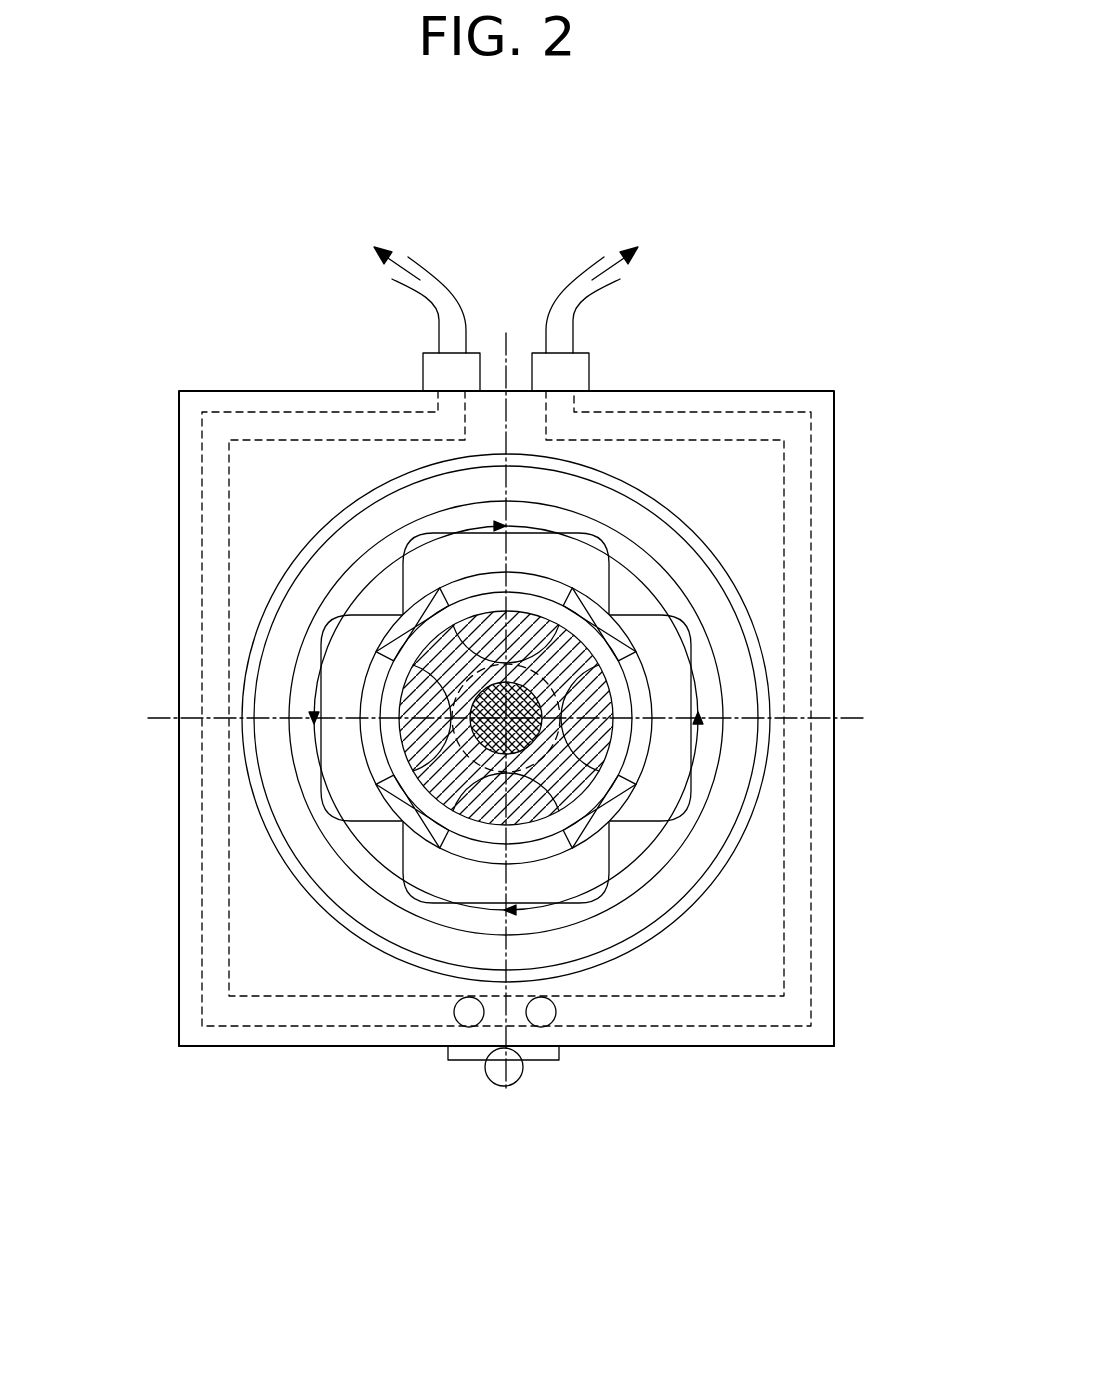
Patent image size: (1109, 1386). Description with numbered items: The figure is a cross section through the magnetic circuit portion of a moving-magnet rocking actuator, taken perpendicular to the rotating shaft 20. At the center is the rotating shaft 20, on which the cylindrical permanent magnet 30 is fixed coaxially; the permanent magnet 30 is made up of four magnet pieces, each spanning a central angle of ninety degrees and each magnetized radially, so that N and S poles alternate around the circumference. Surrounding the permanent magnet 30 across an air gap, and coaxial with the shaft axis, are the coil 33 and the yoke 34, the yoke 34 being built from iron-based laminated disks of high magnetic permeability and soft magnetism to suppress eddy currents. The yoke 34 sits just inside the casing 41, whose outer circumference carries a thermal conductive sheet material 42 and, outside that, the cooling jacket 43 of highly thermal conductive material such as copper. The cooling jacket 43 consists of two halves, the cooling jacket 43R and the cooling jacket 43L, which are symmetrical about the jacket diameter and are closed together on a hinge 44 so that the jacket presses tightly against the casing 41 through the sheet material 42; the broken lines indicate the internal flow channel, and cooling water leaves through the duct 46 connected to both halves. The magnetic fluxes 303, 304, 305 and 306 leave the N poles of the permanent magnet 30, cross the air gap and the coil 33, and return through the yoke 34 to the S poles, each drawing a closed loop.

The rotating shaft 20 is at (485, 732).
The permanent magnet 30 is at (610, 693).
The coil 33 is at (600, 607).
The yoke 34 is at (623, 568).
The casing 41 is at (268, 672).
The thermal conductive sheet material 42 is at (270, 606).
The cooling jacket 43 is at (707, 1220).
The cooling jacket 43L is at (370, 1046).
The cooling jacket 43R is at (638, 1046).
The hinge 44 is at (504, 1072).
The duct 46 is at (435, 287).
The magnetic flux 303 is at (695, 790).
The magnetic flux 304 is at (612, 887).
The magnetic flux 305 is at (337, 812).
The magnetic flux 306 is at (568, 532).